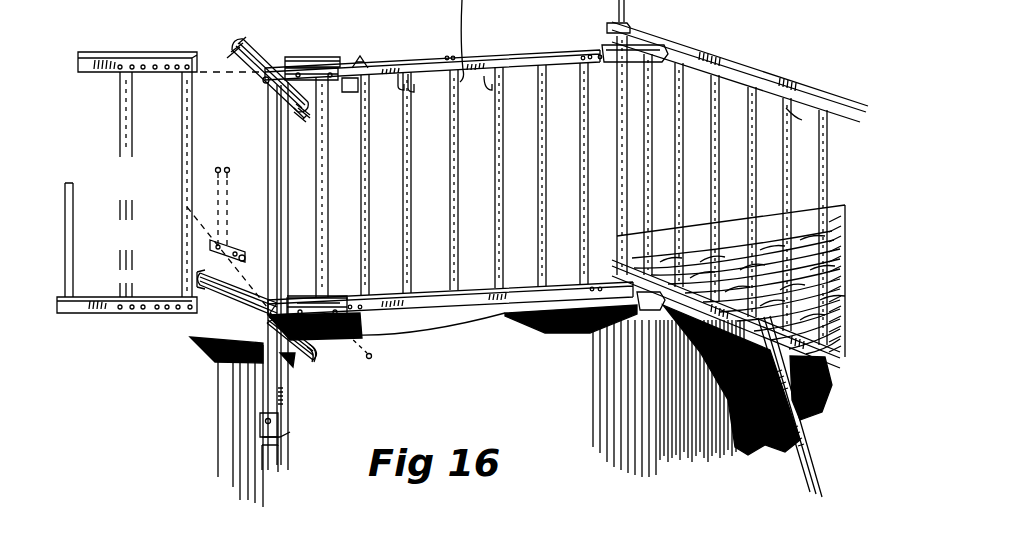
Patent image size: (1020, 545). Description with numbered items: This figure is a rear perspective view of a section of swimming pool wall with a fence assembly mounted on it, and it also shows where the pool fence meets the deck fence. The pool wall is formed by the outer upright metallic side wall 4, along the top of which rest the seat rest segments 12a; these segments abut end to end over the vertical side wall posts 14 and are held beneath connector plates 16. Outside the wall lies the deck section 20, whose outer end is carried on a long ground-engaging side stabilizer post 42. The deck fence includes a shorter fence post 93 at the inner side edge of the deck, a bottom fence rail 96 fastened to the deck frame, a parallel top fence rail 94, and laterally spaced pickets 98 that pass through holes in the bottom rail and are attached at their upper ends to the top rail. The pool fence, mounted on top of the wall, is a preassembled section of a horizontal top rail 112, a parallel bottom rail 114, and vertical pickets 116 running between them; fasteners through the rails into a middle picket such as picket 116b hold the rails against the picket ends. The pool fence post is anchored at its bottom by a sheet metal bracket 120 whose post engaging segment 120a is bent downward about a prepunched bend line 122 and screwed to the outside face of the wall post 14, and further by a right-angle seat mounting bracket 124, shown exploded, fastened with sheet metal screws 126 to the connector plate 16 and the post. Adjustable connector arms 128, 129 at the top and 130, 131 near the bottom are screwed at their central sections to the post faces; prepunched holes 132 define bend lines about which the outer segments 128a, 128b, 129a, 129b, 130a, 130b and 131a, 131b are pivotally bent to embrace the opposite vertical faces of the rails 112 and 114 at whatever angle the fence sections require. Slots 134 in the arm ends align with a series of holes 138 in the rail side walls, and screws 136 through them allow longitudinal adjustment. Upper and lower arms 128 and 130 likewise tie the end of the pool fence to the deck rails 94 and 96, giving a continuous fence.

The outer upright metallic side wall 4 is at (503, 394).
The seat rest segment 12a is at (430, 310).
The side wall post 14 is at (247, 415).
The connector plate 16 is at (263, 366).
The deck section 20 is at (840, 247).
The side stabilizer post 42 is at (812, 450).
The fence post 93 is at (607, 82).
The top fence rail 94 is at (768, 73).
The bottom fence rail 96 is at (803, 343).
The picket 98 is at (787, 112).
The top rail 112 is at (523, 54).
The bottom rail 114 is at (471, 297).
The picket 116 is at (402, 77).
The middle picket 116b is at (488, 76).
The bracket 120 is at (286, 430).
The post engaging segment 120a is at (278, 440).
The bend line 122 is at (275, 422).
The seat mounting bracket 124 is at (213, 250).
The sheet metal screws 126 is at (225, 173).
The adjustable connector arm 128 is at (230, 31).
The connector arm outer segment 128a is at (253, 31).
The connector arm outer segment 128b is at (298, 104).
The adjustable connector arm 129 is at (350, 44).
The connector arm segment 129a is at (310, 57).
The connector arm segment 129b is at (326, 82).
The adjustable connector arm 130 is at (225, 317).
The connector arm segment 130a is at (212, 312).
The connector arm segment 130b is at (292, 372).
The adjustable connector arm 131 is at (372, 362).
The connector arm segment 131a is at (298, 299).
The connector arm segment 131b is at (350, 298).
The prepunched holes 132 is at (265, 78).
The slot 134 is at (231, 53).
The screw 136 is at (348, 87).
The hole 138 is at (365, 62).